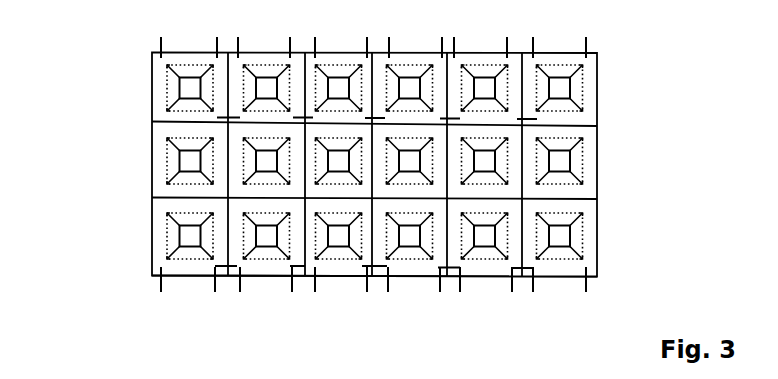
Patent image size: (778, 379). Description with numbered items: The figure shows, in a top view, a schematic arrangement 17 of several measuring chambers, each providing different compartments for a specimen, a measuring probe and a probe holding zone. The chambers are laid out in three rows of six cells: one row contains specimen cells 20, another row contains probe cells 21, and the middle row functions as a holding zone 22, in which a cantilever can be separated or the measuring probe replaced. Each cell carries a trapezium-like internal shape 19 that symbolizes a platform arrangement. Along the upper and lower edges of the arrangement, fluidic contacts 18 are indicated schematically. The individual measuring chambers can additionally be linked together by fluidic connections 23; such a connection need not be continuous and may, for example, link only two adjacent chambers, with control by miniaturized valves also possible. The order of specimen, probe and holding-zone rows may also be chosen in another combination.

The arrangement 17 is at (152, 102).
The fluidic contacts 18 is at (153, 43).
The trapezium-like internal shape 19 is at (170, 163).
The specimen cells 20 is at (593, 90).
The probe cells 21 is at (592, 247).
The holding zone 22 is at (592, 162).
The fluidic connections 23 is at (528, 269).